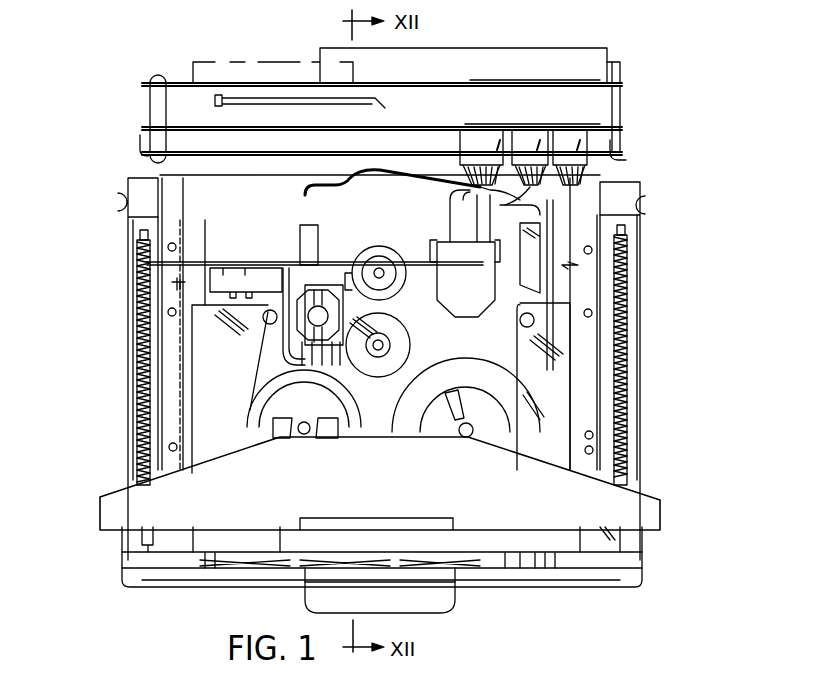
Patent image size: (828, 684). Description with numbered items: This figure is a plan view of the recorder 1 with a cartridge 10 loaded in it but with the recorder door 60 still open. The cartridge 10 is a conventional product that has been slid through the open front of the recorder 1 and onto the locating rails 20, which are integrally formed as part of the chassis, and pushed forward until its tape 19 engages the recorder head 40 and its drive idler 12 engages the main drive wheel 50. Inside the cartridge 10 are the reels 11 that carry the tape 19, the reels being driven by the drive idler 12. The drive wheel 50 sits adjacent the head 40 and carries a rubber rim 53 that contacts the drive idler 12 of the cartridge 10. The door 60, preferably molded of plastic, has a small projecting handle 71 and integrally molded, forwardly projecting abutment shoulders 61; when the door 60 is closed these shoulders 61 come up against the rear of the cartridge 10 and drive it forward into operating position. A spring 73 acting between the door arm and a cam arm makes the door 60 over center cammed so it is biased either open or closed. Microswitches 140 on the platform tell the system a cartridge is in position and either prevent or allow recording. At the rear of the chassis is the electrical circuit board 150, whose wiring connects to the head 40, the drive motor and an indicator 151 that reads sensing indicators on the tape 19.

The recorder 1 is at (680, 175).
The cartridge 10 is at (492, 365).
The reels 11 is at (423, 418).
The drive idler 12 is at (378, 355).
The tape 19 is at (500, 340).
The locating rails 20 is at (175, 285).
The recorder head 40 is at (477, 292).
The main drive wheel 50 is at (391, 253).
The rubber rim 53 is at (368, 248).
The recorder door 60 is at (286, 593).
The abutment shoulders 61 is at (213, 560).
The projecting handle 71 is at (435, 590).
The spring 73 is at (137, 345).
The microswitches 140 is at (250, 292).
The electrical circuit board 150 is at (612, 102).
The indicator 151 is at (325, 290).